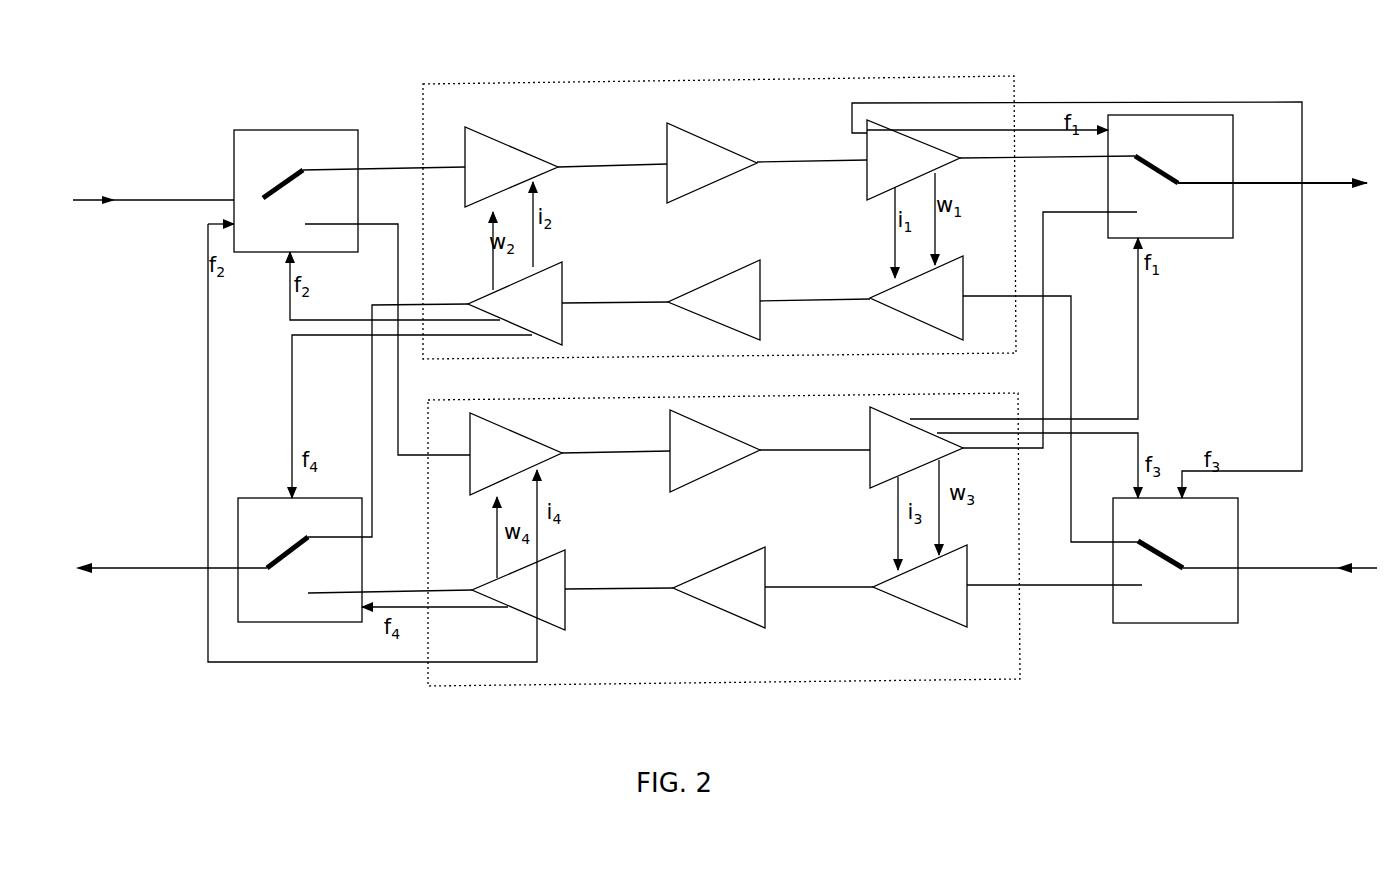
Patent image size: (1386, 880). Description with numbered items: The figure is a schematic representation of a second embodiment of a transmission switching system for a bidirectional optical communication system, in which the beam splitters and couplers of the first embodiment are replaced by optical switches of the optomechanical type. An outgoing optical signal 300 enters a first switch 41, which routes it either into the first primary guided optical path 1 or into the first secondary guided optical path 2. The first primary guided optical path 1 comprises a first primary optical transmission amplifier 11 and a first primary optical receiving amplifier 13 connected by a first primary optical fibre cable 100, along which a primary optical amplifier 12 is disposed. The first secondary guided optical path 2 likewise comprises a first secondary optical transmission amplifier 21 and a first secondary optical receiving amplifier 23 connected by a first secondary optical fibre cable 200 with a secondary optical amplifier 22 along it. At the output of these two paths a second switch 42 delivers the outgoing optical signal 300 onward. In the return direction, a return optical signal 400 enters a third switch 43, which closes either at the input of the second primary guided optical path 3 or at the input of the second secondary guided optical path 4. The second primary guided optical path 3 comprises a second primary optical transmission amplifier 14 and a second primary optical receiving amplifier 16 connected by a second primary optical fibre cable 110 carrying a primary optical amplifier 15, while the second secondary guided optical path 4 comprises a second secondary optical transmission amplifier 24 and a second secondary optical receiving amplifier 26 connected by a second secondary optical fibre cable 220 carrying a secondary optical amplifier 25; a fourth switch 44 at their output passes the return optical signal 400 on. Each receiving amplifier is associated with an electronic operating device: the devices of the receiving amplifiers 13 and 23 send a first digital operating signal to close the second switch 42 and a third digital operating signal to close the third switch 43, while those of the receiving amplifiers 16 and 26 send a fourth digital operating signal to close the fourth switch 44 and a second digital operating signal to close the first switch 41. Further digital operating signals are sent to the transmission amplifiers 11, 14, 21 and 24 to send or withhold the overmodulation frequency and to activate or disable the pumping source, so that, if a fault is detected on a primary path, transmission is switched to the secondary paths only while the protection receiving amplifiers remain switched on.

The first primary guided optical path 1 is at (788, 145).
The first secondary guided optical path 2 is at (818, 435).
The second primary guided optical path 3 is at (807, 287).
The second secondary guided optical path 4 is at (832, 570).
The first primary optical transmission amplifier 11 is at (490, 150).
The primary optical amplifier 12 is at (703, 148).
The first primary optical receiving amplifier 13 is at (877, 135).
The second primary optical transmission amplifier 14 is at (950, 287).
The primary optical amplifier 15 is at (732, 280).
The second primary optical receiving amplifier 16 is at (553, 287).
The first secondary optical transmission amplifier 21 is at (517, 442).
The secondary optical amplifier 22 is at (713, 440).
The first secondary optical receiving amplifier 23 is at (892, 423).
The second secondary optical transmission amplifier 24 is at (958, 570).
The secondary optical amplifier 25 is at (750, 580).
The second secondary optical receiving amplifier 26 is at (550, 577).
The first switch 41 is at (288, 153).
The second switch 42 is at (1173, 133).
The third switch 43 is at (1168, 608).
The fourth switch 44 is at (270, 605).
The first primary optical fibre cable 100 is at (595, 163).
The second primary optical fibre cable 110 is at (618, 297).
The first secondary optical fibre cable 200 is at (602, 450).
The second secondary optical fibre cable 220 is at (623, 590).
The outgoing optical signal 300 is at (89, 194).
The return optical signal 400 is at (110, 578).